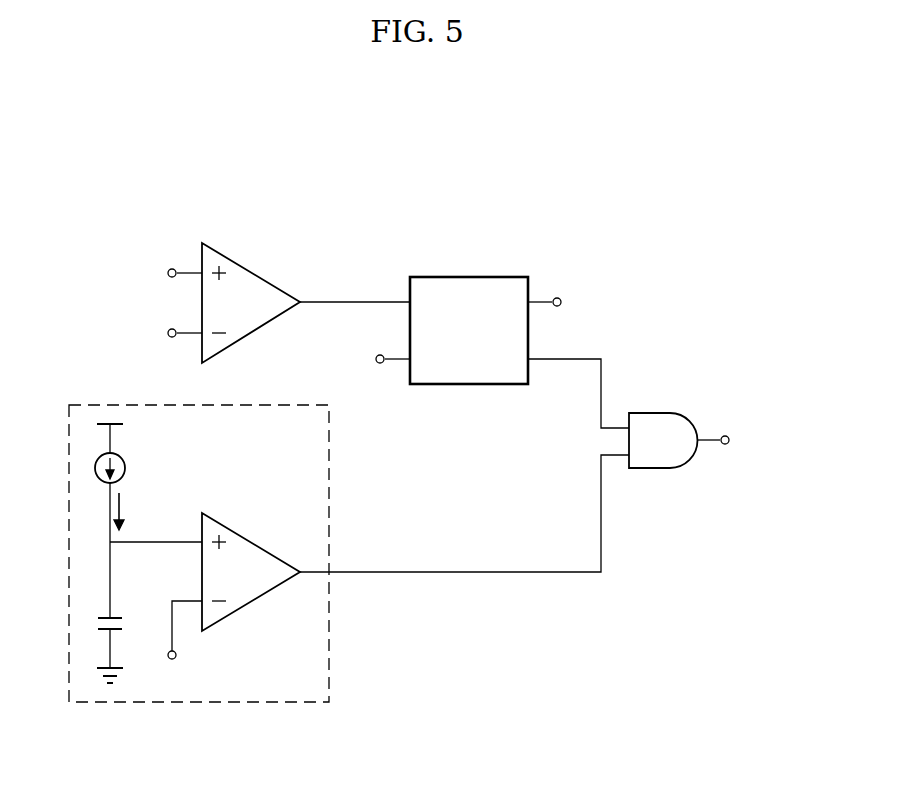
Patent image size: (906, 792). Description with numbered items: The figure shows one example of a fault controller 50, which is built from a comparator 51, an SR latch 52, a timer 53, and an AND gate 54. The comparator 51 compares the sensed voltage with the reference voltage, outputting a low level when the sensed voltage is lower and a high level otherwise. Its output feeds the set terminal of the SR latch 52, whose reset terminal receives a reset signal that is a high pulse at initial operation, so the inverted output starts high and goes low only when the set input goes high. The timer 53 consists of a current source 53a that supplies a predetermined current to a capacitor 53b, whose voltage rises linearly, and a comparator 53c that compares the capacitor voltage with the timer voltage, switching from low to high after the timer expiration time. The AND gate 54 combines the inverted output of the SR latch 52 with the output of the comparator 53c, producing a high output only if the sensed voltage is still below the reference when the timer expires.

The fault controller 50 is at (405, 183).
The comparator 51 is at (250, 271).
The SR latch 52 is at (513, 277).
The timer 53 is at (329, 480).
The current source 53a is at (125, 468).
The capacitor 53b is at (120, 617).
The comparator 53c is at (250, 540).
The AND gate 54 is at (665, 413).